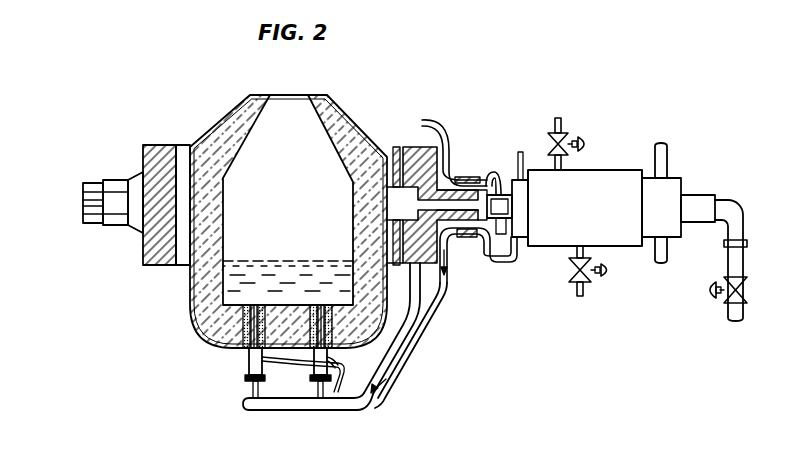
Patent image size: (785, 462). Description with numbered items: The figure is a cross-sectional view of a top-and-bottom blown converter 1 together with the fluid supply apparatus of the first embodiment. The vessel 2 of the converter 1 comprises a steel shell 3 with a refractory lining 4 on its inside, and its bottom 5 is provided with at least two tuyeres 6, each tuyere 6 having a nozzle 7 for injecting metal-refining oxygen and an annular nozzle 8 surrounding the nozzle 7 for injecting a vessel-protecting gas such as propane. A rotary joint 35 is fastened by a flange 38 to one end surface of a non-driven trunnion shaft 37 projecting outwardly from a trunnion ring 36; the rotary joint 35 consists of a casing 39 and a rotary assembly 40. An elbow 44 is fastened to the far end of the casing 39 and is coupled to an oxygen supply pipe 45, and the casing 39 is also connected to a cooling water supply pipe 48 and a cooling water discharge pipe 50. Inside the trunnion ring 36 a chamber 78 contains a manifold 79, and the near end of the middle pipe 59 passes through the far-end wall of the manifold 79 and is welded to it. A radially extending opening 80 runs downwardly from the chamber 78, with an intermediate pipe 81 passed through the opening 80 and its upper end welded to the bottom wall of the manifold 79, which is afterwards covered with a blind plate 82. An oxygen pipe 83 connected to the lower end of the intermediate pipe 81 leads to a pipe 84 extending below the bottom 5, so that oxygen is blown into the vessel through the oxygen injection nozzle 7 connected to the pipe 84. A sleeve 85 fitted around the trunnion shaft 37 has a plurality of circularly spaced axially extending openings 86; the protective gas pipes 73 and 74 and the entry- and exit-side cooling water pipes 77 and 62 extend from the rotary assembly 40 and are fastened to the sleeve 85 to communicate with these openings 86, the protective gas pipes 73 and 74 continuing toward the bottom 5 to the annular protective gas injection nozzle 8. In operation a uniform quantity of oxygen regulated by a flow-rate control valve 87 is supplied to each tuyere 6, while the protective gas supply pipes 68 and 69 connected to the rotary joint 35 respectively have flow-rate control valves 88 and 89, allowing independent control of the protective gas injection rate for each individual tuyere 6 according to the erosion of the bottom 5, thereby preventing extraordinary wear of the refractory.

The top-and-bottom blown converter 1 is at (354, 106).
The vessel 2 is at (296, 186).
The steel shell 3 is at (362, 135).
The refractory lining 4 is at (303, 101).
The bottom 5 is at (288, 310).
The tuyere 6 is at (326, 300).
The nozzle 7 is at (255, 303).
The annular nozzle 8 is at (248, 303).
The rotary joint 35 is at (619, 112).
The trunnion ring 36 is at (398, 150).
The non-driven trunnion shaft 37 is at (465, 238).
The flange 38 is at (488, 178).
The casing 39 is at (618, 172).
The rotary assembly 40 is at (513, 180).
The elbow 44 is at (735, 199).
The oxygen supply pipe 45 is at (728, 262).
The cooling water supply pipe 48 is at (665, 260).
The cooling water discharge pipe 50 is at (668, 148).
The middle pipe 59 is at (452, 205).
The exit-side cooling water pipe 62 is at (498, 176).
The protective gas supply pipe 68 is at (562, 130).
The protective gas supply pipe 69 is at (578, 285).
The protective gas pipe 73 is at (293, 368).
The protective gas pipe 74 is at (344, 374).
The entry-side cooling water pipe 77 is at (504, 240).
The chamber 78 is at (405, 221).
The manifold 79 is at (433, 136).
The radially extending opening 80 is at (414, 290).
The intermediate pipe 81 is at (421, 314).
The blind plate 82 is at (410, 199).
The oxygen pipe 83 is at (398, 350).
The pipe 84 is at (278, 408).
The sleeve 85 is at (472, 238).
The axially extending openings 86 is at (457, 238).
The flow-rate control valve 87 is at (710, 293).
The flow-rate control valve 88 is at (589, 144).
The flow-rate control valve 89 is at (607, 277).